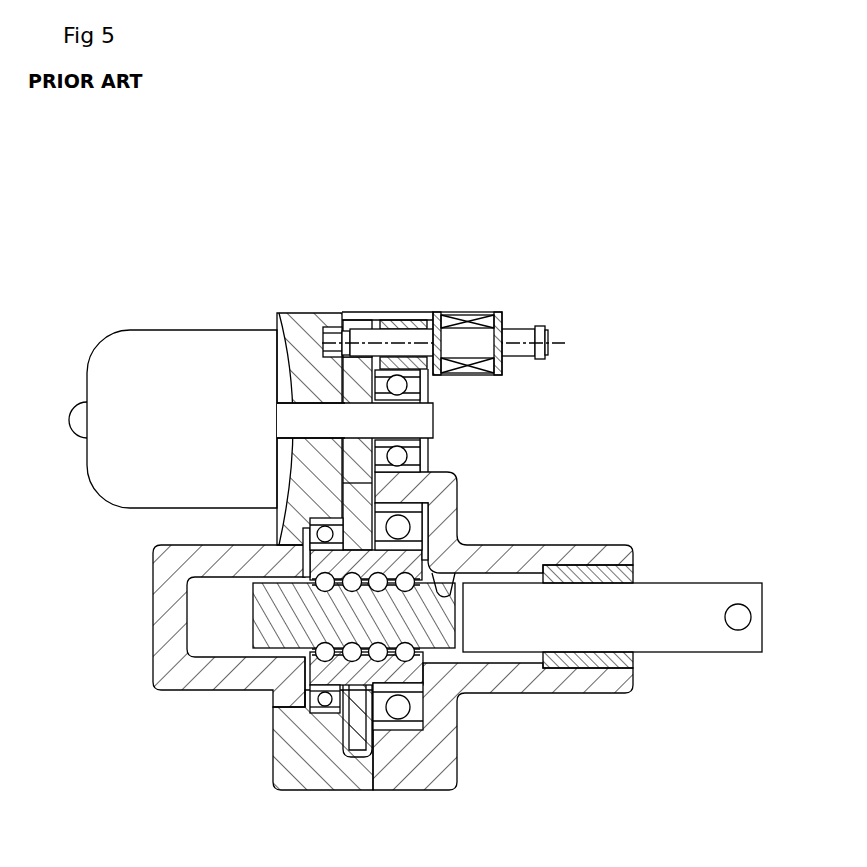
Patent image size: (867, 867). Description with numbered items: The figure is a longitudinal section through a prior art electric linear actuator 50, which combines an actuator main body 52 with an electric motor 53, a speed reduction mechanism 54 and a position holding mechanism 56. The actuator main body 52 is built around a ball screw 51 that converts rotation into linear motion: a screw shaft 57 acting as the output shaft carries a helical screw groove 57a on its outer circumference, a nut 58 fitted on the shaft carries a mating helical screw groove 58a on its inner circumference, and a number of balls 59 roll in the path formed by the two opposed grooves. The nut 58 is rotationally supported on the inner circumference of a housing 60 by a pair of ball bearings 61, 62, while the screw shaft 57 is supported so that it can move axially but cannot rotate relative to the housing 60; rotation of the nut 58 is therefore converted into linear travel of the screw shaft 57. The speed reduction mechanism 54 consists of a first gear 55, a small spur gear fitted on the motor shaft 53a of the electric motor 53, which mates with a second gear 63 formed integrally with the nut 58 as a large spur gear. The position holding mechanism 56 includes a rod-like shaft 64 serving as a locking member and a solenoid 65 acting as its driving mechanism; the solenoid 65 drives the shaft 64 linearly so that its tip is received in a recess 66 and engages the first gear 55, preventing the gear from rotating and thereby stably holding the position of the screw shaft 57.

The actuator drive unit (prior art) 50 is at (133, 241).
The ball screw 51 is at (440, 728).
The actuator main body 52 is at (690, 563).
The electric motor 53 is at (215, 340).
The motor shaft 53a is at (305, 417).
The speed reduction mechanism 54 is at (492, 406).
The first gear 55 is at (433, 410).
The position holding mechanism 56 is at (515, 297).
The screw shaft 57 is at (263, 623).
The helical screw groove 57a is at (455, 575).
The nut 58 is at (345, 732).
The helical screw groove 58a is at (427, 668).
The balls 59 is at (303, 677).
The housing 60 is at (562, 543).
The ball bearing 61 is at (318, 708).
The ball bearing 62 is at (400, 710).
The second gear 63 is at (424, 474).
The shaft 64 is at (507, 335).
The solenoid 65 is at (464, 298).
The recess 66 is at (330, 322).